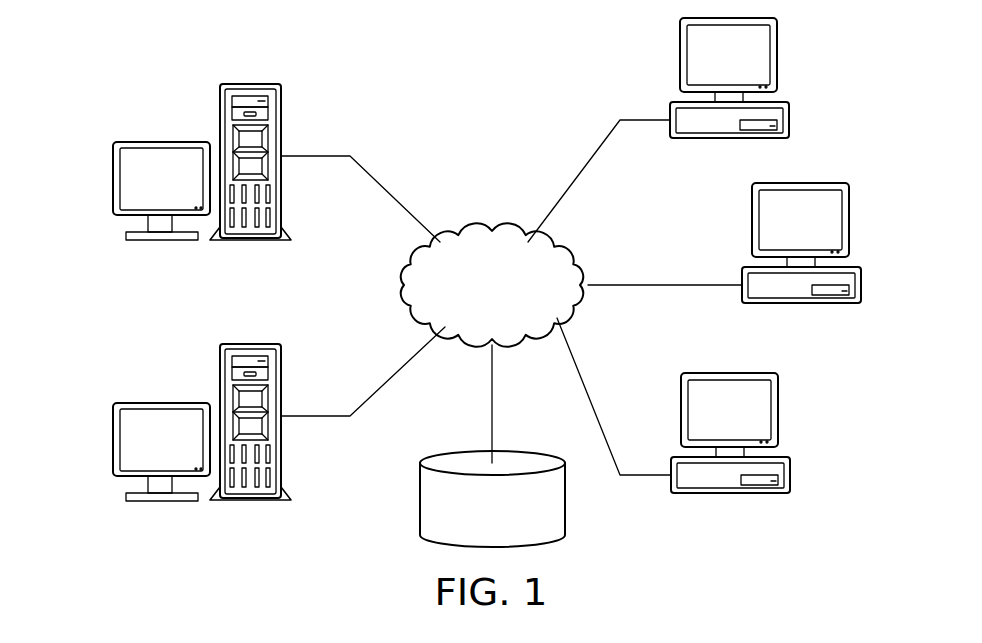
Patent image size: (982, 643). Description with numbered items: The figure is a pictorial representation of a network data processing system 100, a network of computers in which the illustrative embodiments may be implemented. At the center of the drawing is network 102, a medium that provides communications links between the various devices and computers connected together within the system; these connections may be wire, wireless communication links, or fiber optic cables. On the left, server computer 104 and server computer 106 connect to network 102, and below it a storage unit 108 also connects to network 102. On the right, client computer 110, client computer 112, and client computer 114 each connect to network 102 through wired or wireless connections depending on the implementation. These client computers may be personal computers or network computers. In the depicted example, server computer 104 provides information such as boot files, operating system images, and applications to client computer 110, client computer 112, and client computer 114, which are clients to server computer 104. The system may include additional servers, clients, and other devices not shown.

The network data processing system 100 is at (360, 67).
The network 102 is at (466, 231).
The server computer 104 is at (113, 180).
The server computer 106 is at (113, 438).
The storage unit 108 is at (420, 497).
The client computer 110 is at (790, 110).
The client computer 112 is at (861, 295).
The client computer 114 is at (790, 485).